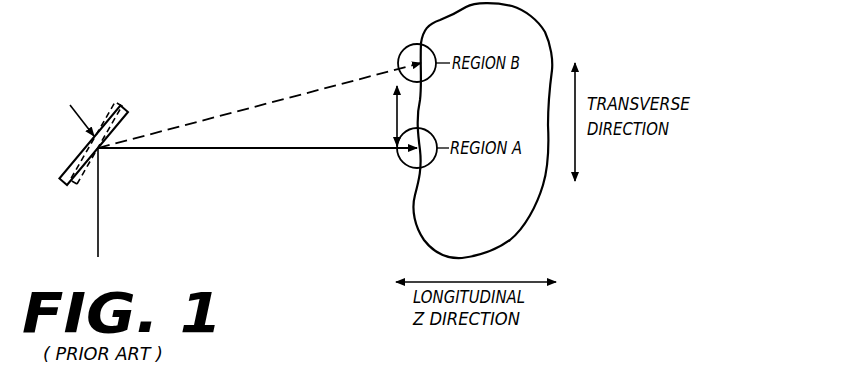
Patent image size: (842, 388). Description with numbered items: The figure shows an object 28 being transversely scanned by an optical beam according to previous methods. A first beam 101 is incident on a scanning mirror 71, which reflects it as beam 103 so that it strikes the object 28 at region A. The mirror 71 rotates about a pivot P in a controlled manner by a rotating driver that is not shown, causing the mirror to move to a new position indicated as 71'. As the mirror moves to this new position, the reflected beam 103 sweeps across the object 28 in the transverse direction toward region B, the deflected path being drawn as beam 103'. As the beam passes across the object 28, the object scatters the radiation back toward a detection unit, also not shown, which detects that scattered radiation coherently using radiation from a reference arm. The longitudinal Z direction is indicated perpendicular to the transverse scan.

The object 28 is at (532, 23).
The scanning mirror 71 is at (110, 133).
The new position of scanning mirror 71' is at (96, 123).
The first beam 101 is at (98, 197).
The reflected beam 103 is at (257, 162).
The reflected beam in scanned position 103' is at (259, 105).
The pivot P is at (75, 110).